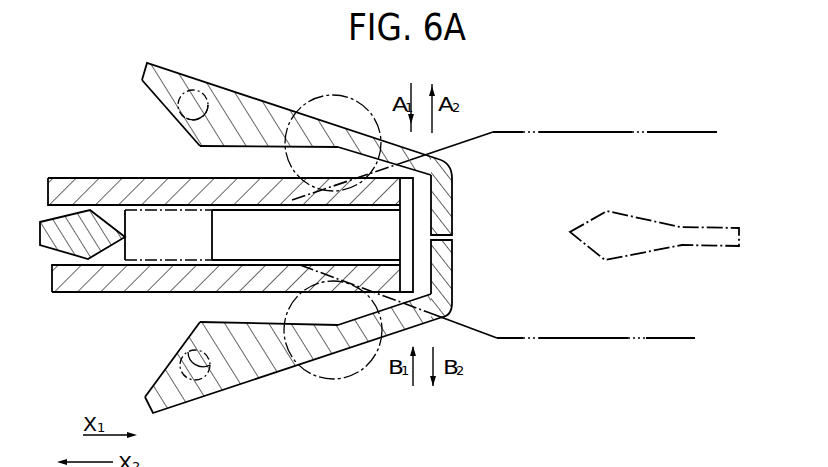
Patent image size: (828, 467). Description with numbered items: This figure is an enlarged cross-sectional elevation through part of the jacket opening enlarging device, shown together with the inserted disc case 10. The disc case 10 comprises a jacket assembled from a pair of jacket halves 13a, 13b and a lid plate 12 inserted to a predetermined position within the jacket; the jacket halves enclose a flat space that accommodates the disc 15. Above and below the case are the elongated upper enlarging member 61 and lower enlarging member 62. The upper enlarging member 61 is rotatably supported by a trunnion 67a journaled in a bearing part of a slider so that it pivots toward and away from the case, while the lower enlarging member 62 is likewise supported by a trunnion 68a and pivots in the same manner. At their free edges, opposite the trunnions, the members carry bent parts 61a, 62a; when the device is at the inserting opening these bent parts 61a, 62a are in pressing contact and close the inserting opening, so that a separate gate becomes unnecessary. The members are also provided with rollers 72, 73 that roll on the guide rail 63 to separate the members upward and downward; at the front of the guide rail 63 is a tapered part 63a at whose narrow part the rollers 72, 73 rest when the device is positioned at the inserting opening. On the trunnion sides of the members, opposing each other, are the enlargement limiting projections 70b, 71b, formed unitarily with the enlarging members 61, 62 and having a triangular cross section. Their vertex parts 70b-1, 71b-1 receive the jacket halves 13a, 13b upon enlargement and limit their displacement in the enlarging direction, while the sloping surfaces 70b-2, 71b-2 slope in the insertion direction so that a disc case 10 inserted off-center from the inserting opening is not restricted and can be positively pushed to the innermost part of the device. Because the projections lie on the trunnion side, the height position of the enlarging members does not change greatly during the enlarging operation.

The disc case 10 is at (77, 174).
The lid plate 12 is at (212, 238).
The jacket half 13a is at (141, 178).
The jacket half 13b is at (128, 292).
The disc 15 is at (58, 252).
The upper enlarging member 61 is at (257, 95).
The downwardly bent part 61a is at (451, 186).
The lower enlarging member 62 is at (266, 382).
The bent part 62a is at (452, 273).
The guide rail 63 is at (588, 133).
The tapered part 63a is at (465, 138).
The trunnion 67a is at (190, 89).
The trunnion 68a is at (210, 380).
The enlargement limiting projection 70b is at (247, 139).
The vertex part 70b-1 is at (200, 146).
The sloping surface 70b-2 is at (182, 123).
The enlargement limiting projection 71b is at (240, 331).
The vertex part 71b-1 is at (200, 322).
The sloping surface 71b-2 is at (185, 344).
The roller 72 is at (349, 92).
The roller 73 is at (340, 382).